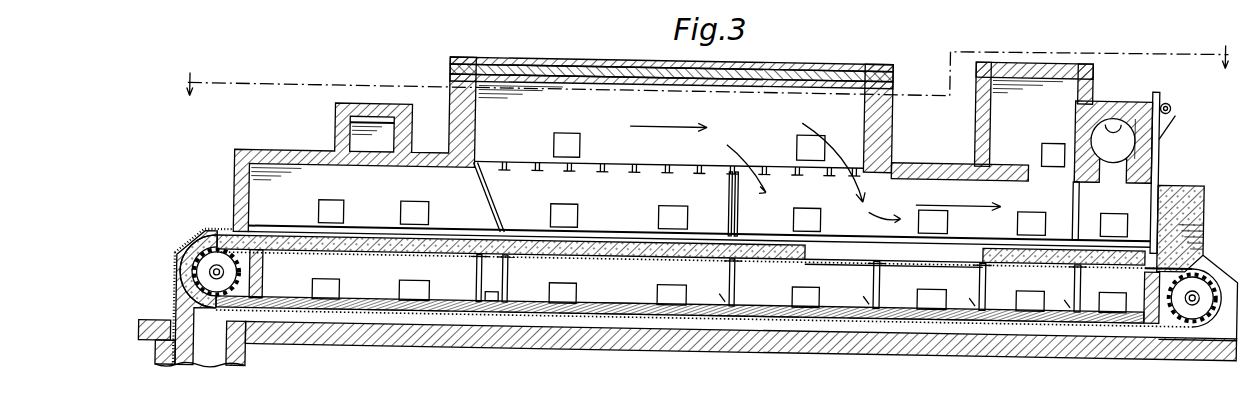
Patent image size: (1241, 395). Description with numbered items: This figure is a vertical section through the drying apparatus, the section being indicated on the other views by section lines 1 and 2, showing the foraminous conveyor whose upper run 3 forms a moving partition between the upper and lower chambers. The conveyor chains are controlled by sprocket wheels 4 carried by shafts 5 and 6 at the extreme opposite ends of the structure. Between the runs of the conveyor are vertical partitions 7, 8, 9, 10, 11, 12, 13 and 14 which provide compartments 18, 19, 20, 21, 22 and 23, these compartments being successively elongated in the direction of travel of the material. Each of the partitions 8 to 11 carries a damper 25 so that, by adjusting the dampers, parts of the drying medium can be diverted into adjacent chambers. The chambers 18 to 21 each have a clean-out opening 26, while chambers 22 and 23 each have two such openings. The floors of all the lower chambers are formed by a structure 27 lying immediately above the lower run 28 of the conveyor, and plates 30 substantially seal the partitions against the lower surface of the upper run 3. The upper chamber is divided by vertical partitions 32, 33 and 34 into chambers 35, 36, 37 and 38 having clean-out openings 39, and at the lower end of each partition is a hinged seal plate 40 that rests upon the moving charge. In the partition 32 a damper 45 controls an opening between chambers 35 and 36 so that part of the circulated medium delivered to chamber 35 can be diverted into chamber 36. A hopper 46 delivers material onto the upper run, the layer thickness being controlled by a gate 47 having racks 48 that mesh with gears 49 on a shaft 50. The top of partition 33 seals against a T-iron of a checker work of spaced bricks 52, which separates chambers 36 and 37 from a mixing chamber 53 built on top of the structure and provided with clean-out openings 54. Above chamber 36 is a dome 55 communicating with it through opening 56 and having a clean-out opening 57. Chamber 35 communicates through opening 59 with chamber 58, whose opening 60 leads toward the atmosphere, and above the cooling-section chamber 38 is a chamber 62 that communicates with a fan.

The furnace apparatus / section line 1 is at (225, 156).
The section line 2 is at (215, 285).
The upper run of the conveyor 3 is at (838, 256).
The sprocket wheels 4 is at (203, 268).
The shaft 5 is at (1193, 296).
The shaft 6 is at (212, 287).
The vertical partition 7 is at (1150, 316).
The vertical partition 8 is at (1058, 322).
The vertical partition 9 is at (978, 312).
The vertical partition 10 is at (870, 309).
The vertical partition 11 is at (725, 303).
The vertical partition 12 is at (507, 297).
The vertical partition 13 is at (486, 298).
The vertical partition 14 is at (253, 304).
The compartment 18 is at (1135, 301).
The compartment 19 is at (1060, 303).
The compartment 20 is at (910, 300).
The compartment 21 is at (765, 297).
The compartment 22 is at (627, 297).
The compartment 23 is at (385, 297).
The damper 25 is at (724, 297).
The clean-out opening 26 is at (332, 289).
The floor-forming structure 27 is at (615, 297).
The lower run of the conveyor 28 is at (582, 313).
The plates 30 is at (476, 262).
The vertical partition 32 is at (1072, 198).
The vertical partition 33 is at (728, 196).
The vertical partition 34 is at (474, 192).
The chamber 35 is at (1140, 188).
The chamber 36 is at (940, 177).
The chamber 37 is at (615, 178).
The chamber 38 is at (285, 178).
The clean-out openings 39 is at (335, 212).
The hinged seal plate 40 is at (460, 238).
The damper 45 is at (1079, 218).
The hopper 46 is at (1200, 193).
The gate 47 is at (1203, 226).
The racks 48 is at (1160, 140).
The gears 49 is at (1169, 96).
The shaft 50 is at (1170, 103).
The bricks 52 is at (518, 162).
The mixing chamber 53 is at (840, 95).
The clean-out openings 54 is at (578, 140).
The chamber or dome 55 is at (1045, 80).
The opening 56 is at (1030, 166).
The clean-out opening 57 is at (1048, 140).
The chamber 58 is at (1131, 112).
The opening 59 is at (1112, 170).
The opening 60 is at (1101, 114).
The chamber 62 is at (385, 122).